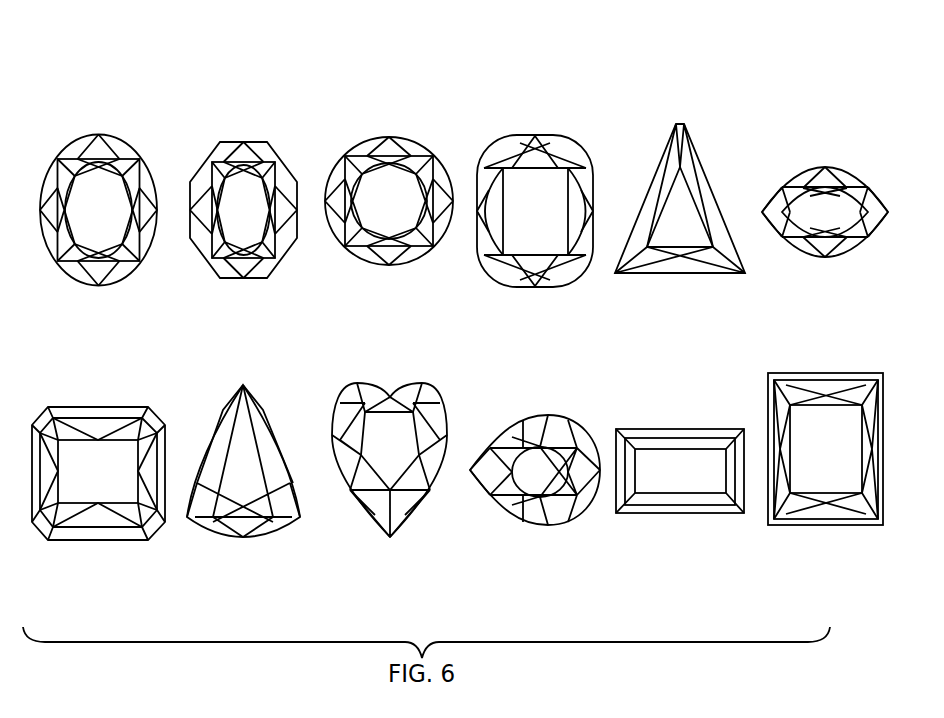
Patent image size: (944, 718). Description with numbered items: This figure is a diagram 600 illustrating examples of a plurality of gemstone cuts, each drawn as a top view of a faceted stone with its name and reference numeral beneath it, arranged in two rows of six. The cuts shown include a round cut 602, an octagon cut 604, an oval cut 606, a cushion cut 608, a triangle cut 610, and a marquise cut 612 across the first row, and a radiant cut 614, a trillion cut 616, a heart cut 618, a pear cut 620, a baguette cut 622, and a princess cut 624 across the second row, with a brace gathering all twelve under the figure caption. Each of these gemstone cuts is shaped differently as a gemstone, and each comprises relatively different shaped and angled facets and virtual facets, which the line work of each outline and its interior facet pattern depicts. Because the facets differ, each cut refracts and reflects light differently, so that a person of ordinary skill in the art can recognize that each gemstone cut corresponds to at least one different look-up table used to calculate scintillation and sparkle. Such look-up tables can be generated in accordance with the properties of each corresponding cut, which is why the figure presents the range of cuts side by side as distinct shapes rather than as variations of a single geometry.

The gemstone shape chart 600 is at (827, 72).
The round cut 602 is at (81, 340).
The octagon cut 604 is at (226, 340).
The oval cut 606 is at (372, 340).
The cushion cut 608 is at (518, 340).
The triangle cut 610 is at (663, 340).
The marquise cut 612 is at (808, 340).
The radiant cut 614 is at (81, 600).
The trillion cut 616 is at (226, 600).
The heart cut 618 is at (372, 600).
The pear cut 620 is at (518, 600).
The baguette cut 622 is at (663, 600).
The princess cut 624 is at (808, 600).